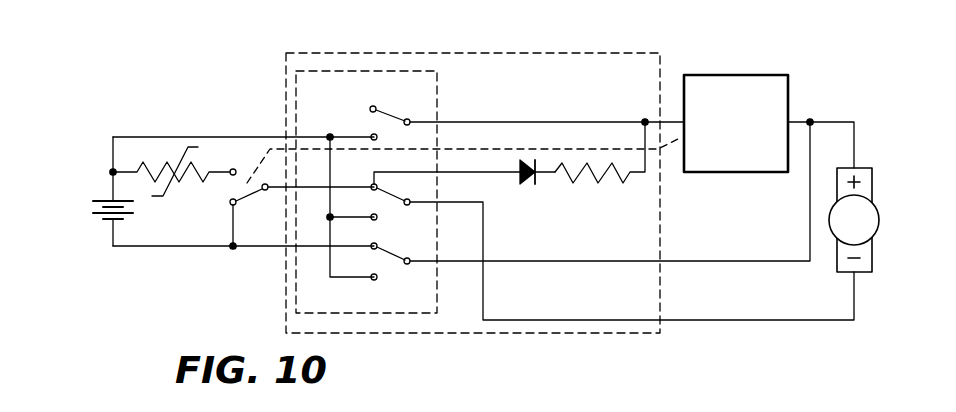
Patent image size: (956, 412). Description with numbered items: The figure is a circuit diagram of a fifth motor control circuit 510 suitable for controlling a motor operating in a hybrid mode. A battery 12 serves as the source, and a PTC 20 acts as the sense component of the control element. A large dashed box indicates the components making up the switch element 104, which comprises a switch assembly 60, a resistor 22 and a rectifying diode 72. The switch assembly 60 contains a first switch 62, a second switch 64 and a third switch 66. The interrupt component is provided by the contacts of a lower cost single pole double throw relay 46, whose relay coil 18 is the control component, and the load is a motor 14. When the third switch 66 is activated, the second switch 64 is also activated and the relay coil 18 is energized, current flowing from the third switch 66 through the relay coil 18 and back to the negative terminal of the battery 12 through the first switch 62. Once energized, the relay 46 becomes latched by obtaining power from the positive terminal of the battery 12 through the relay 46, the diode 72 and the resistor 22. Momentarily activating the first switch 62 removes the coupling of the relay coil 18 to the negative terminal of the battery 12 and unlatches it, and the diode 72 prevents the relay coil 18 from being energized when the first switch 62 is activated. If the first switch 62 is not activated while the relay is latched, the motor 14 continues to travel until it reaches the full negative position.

The fifth motor control circuit 510 is at (139, 70).
The battery 12 is at (99, 199).
The PTC 20 is at (185, 176).
The relay 46 is at (248, 193).
The switch assembly 60 is at (332, 99).
The third switch 66 is at (383, 112).
The second switch 64 is at (390, 199).
The first switch 62 is at (388, 266).
The switch element 104 is at (612, 81).
The rectifying diode 72 is at (523, 185).
The resistor 22 is at (603, 179).
The relay coil 18 is at (723, 161).
The motor 14 is at (842, 232).